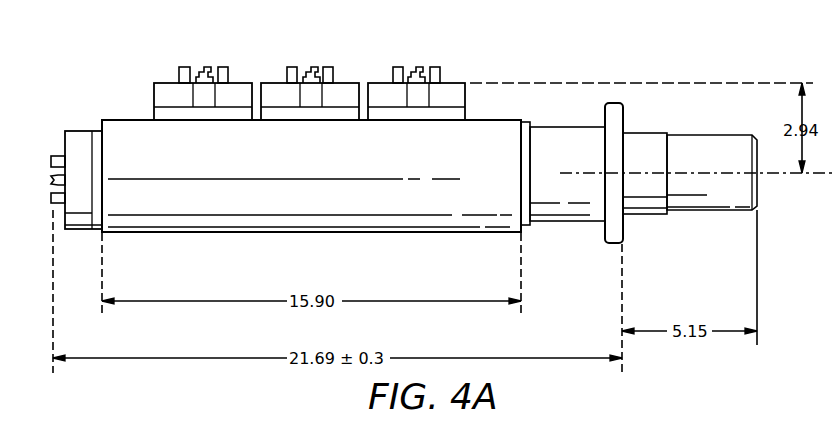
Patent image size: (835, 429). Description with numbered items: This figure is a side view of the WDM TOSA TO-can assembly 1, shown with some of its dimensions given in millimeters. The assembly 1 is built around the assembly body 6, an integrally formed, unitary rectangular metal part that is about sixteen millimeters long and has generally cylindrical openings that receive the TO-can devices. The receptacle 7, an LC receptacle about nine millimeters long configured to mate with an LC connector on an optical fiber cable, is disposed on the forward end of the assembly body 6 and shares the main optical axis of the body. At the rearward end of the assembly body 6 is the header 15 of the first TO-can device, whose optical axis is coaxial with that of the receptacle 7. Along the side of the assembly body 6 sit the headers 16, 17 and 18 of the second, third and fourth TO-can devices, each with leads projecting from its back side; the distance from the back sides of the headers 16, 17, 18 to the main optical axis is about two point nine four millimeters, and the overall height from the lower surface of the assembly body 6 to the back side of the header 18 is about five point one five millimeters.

The WDM TOSA TO-can assembly 1 is at (56, 30).
The assembly body 6 is at (132, 119).
The receptacle 7 is at (643, 132).
The header 15 is at (78, 131).
The header 16 is at (167, 82).
The header 17 is at (279, 82).
The header 18 is at (385, 82).